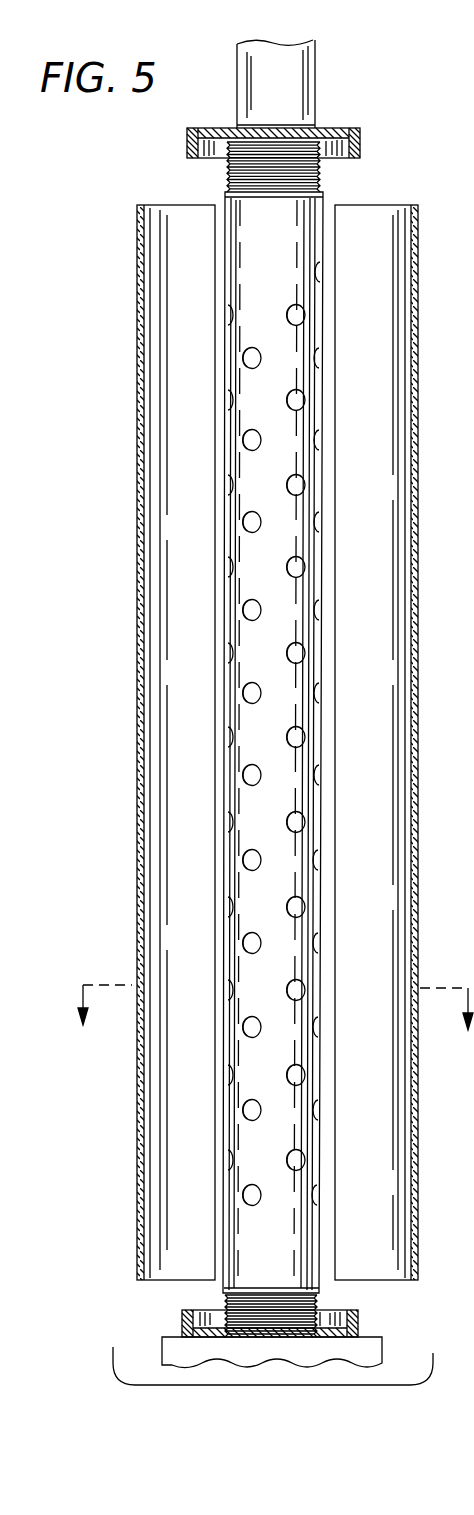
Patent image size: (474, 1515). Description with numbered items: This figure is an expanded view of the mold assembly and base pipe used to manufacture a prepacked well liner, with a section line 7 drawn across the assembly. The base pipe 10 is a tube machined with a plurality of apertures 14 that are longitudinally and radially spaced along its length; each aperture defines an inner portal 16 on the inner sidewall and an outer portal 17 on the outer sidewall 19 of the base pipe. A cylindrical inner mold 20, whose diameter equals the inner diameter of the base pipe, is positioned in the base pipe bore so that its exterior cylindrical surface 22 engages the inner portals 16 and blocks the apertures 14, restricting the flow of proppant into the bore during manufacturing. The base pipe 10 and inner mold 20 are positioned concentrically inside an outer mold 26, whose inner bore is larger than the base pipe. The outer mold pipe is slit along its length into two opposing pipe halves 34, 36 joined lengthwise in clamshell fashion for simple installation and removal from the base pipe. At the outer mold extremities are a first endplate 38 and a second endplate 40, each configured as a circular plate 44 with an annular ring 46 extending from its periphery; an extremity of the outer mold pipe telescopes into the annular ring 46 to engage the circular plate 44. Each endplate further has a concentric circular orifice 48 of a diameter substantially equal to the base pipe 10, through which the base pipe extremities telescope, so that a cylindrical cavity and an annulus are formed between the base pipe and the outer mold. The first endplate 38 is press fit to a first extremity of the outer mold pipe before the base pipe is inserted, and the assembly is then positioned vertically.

The inner mold 20 is at (302, 43).
The exterior cylindrical surface 22 is at (290, 96).
The endplate 40 is at (361, 143).
The annular ring 46 is at (187, 146).
The circular plate 44 is at (332, 150).
The base pipe 10 is at (279, 225).
The outer sidewall 19 is at (279, 293).
The apertures 14 is at (255, 514).
The inner portals 16 is at (305, 400).
The outer portals 17 is at (306, 653).
The pipe half 34 is at (137, 600).
The pipe half 36 is at (419, 433).
The outer mold 26 is at (377, 334).
The first endplate 38 is at (357, 1325).
The concentric circular orifice 48 is at (322, 1338).
The section line 7- 7 is at (272, 1030).